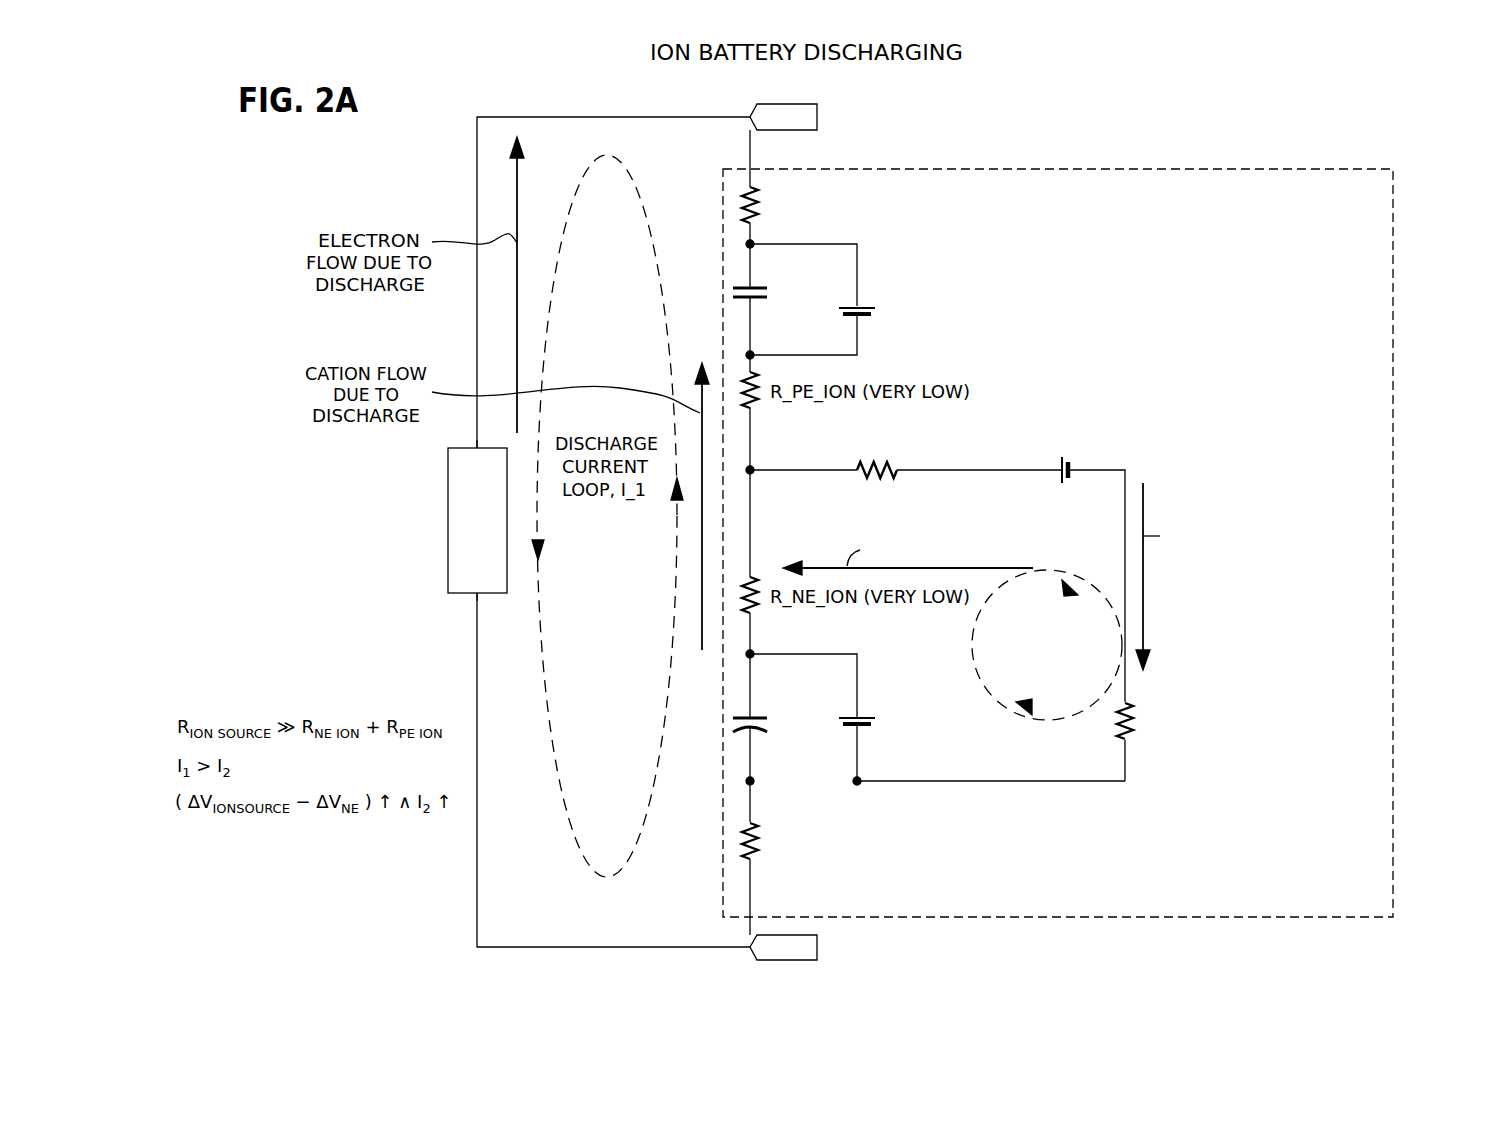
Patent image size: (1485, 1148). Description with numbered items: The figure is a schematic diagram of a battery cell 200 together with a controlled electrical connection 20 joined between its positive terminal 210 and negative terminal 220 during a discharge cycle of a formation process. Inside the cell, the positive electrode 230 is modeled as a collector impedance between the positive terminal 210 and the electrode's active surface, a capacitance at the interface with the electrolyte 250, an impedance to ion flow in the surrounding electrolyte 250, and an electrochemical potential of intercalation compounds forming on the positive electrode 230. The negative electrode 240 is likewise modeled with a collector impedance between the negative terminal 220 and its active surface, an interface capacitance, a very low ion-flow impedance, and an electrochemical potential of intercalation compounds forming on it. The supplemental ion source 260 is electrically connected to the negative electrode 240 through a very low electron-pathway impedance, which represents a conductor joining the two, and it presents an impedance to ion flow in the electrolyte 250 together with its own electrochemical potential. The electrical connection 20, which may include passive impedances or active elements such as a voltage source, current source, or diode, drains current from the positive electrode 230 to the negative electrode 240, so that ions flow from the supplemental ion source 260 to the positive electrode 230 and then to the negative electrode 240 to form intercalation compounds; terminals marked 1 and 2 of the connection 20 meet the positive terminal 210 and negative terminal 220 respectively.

The battery cell 200 is at (1167, 169).
The positive terminal 210 is at (750, 165).
The negative terminal 220 is at (750, 920).
The positive electrode 230 is at (977, 266).
The negative electrode 240 is at (975, 810).
The electrolyte 250 is at (998, 463).
The supplemental ion source 260 is at (1205, 478).
The controlled electrical connection 20 is at (448, 543).
The first terminal 1 is at (469, 436).
The second terminal 2 is at (469, 605).